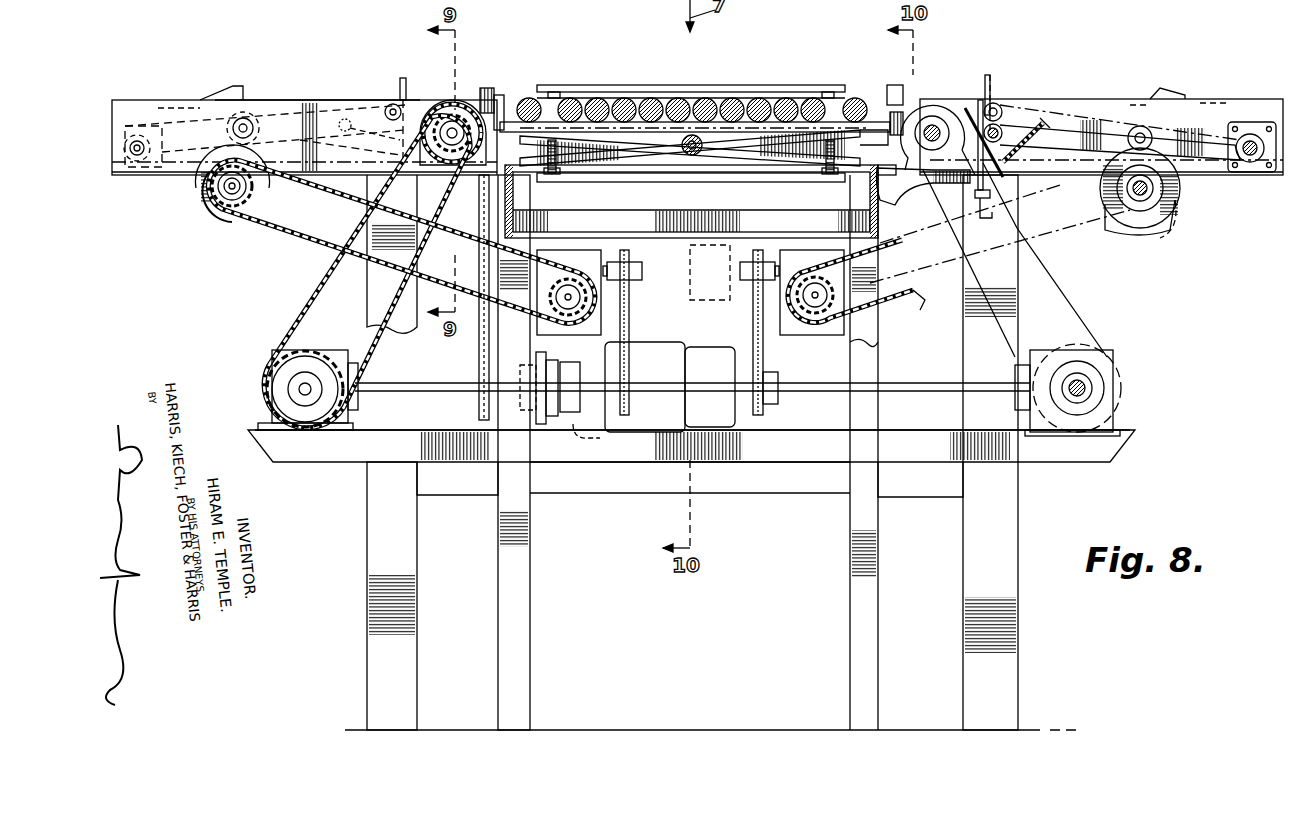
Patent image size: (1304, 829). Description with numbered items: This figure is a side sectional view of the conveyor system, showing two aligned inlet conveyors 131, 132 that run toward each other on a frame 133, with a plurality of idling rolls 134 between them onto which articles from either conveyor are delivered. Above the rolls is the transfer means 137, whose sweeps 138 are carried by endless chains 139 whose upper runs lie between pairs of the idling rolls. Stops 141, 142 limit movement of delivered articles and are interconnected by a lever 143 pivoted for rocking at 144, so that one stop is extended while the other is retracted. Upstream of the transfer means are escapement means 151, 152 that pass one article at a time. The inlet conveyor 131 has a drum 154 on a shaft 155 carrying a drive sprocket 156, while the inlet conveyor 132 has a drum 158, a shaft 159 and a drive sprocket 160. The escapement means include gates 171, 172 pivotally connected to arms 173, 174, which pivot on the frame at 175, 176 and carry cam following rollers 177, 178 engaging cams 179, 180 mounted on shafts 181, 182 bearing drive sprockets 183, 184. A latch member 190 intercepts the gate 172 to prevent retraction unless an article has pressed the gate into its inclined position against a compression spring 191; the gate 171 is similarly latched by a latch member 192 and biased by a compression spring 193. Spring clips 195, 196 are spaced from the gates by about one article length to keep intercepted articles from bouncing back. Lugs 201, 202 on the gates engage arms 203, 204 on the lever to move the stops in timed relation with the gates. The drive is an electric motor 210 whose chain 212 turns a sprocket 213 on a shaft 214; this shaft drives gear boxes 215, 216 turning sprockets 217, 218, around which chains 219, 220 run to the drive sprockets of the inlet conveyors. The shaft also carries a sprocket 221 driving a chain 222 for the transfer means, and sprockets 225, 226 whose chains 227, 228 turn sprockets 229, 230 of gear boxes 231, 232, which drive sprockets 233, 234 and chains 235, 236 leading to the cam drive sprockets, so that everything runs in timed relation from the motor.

The inlet conveyor 131 is at (305, 95).
The inlet conveyor 132 is at (1075, 88).
The frame 133 is at (412, 560).
The idling rolls 134 is at (675, 92).
The transfer means 137 is at (722, 80).
The sweeps 138 is at (785, 90).
The endless chains 139 is at (552, 176).
The stop 141 is at (878, 118).
The stop 142 is at (505, 100).
The lever 143 is at (558, 125).
The pivot 144 is at (692, 158).
The escapement means 151 is at (400, 72).
The escapement means 152 is at (1000, 75).
The drum 154 is at (450, 110).
The shaft 155 is at (462, 120).
The drive sprocket 156 is at (460, 105).
The drum 158 is at (945, 118).
The shaft 159 is at (935, 120).
The drive sprocket 160 is at (920, 115).
The gate 171 is at (398, 92).
The gate 172 is at (998, 105).
The arm 173 is at (270, 105).
The arm 174 is at (1200, 128).
The pivotal connection 175 is at (137, 162).
The pivotal connection 176 is at (1250, 160).
The cam following roller 177 is at (243, 112).
The cam following roller 178 is at (1130, 128).
The cam 179 is at (215, 207).
The cam 180 is at (1125, 228).
The shaft 181 is at (258, 200).
The shaft 182 is at (1125, 190).
The drive sprocket 183 is at (237, 208).
The drive sprocket 184 is at (1170, 232).
The latch member 190 is at (985, 210).
The compression spring 191 is at (1045, 157).
The latch member 192 is at (375, 158).
The compression spring 193 is at (360, 120).
The spring clip 195 is at (220, 92).
The spring clip 196 is at (1170, 92).
The lug 201 is at (420, 108).
The lug 202 is at (995, 95).
The arm 203 is at (445, 208).
The arm 204 is at (935, 200).
The electric motor 210 is at (692, 345).
The chain 212 is at (552, 360).
The sprocket 213 is at (543, 409).
The shaft 214 is at (425, 395).
The gear box 215 is at (345, 440).
The gear box 216 is at (1110, 420).
The sprocket 217 is at (262, 386).
The sprocket 218 is at (1080, 345).
The chain 219 is at (280, 310).
The chain 220 is at (1075, 298).
The sprocket 221 is at (495, 418).
The chain 222 is at (478, 348).
The sprocket 225 is at (602, 408).
The sprocket 226 is at (778, 372).
The chain 227 is at (628, 308).
The chain 228 is at (755, 318).
The sprocket 229 is at (632, 270).
The sprocket 230 is at (755, 272).
The gear box 231 is at (582, 260).
The gear box 232 is at (800, 262).
The sprocket 233 is at (555, 262).
The sprocket 234 is at (808, 265).
The chain 235 is at (332, 248).
The chain 236 is at (863, 285).